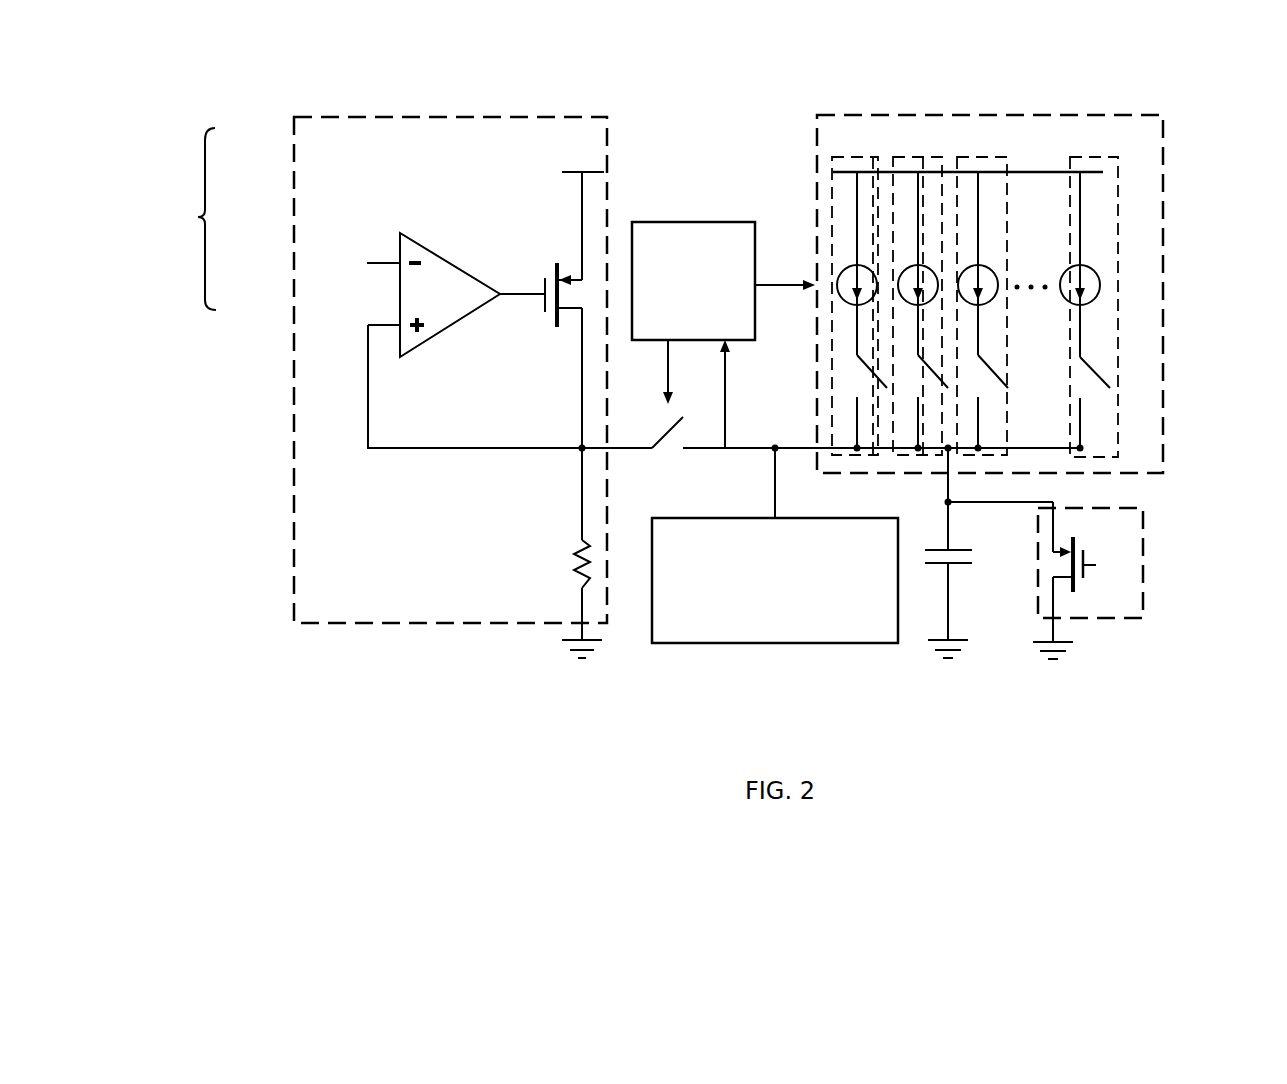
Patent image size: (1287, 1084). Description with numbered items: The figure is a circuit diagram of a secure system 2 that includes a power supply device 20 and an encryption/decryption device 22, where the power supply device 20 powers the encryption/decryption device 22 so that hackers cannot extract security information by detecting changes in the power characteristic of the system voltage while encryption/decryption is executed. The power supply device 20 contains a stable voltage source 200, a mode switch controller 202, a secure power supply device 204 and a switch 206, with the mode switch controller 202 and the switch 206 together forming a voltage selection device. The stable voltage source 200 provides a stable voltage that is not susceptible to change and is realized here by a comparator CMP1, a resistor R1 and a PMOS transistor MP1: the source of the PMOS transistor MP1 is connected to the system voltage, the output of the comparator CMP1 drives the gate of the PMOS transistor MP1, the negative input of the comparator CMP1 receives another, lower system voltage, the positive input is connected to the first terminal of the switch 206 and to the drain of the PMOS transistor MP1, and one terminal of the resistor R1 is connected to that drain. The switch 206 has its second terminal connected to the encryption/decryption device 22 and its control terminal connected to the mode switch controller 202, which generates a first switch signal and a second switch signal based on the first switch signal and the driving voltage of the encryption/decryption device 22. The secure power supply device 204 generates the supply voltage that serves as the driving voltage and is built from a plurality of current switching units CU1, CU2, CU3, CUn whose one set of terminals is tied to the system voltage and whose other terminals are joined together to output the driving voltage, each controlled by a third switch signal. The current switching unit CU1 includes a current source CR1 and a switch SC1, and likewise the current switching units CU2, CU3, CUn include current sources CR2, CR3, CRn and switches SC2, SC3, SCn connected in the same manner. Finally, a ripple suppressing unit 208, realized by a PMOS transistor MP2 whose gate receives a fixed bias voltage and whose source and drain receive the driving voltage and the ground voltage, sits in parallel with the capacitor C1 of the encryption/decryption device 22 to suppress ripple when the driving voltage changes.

The secure system 2 is at (151, 99).
The power supply device 20 is at (198, 217).
The encryption/decryption device 22 is at (675, 518).
The stable voltage source 200 is at (527, 115).
The mode switch controller 202 is at (710, 220).
The secure power supply device 204 is at (1040, 113).
The switch 206 is at (672, 425).
The ripple suppressing unit 208 is at (1125, 508).
The comparator CMP1 is at (452, 263).
The PMOS transistor MP1 is at (557, 320).
The resistor R1 is at (574, 572).
The capacitor C1 is at (965, 551).
The PMOS transistor MP2 is at (1080, 585).
The current switching unit CU1 is at (843, 157).
The current switching unit CU2 is at (907, 157).
The current switching unit CU3 is at (993, 157).
The current switching unit CUn is at (1088, 157).
The current source CR1 is at (838, 295).
The current source CR2 is at (905, 266).
The current source CR3 is at (998, 268).
The current source CRn is at (1062, 294).
The switch SC1 is at (880, 380).
The switch SC2 is at (937, 385).
The switch SC3 is at (1000, 372).
The switch SCn is at (1092, 365).